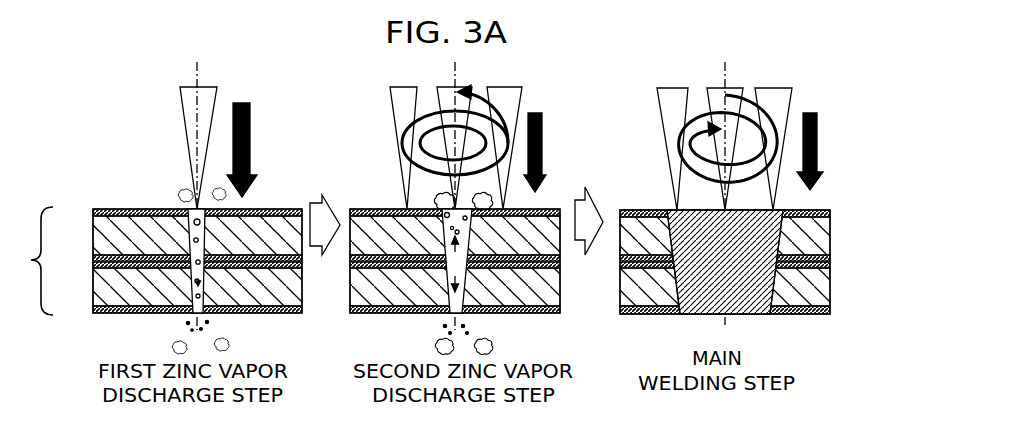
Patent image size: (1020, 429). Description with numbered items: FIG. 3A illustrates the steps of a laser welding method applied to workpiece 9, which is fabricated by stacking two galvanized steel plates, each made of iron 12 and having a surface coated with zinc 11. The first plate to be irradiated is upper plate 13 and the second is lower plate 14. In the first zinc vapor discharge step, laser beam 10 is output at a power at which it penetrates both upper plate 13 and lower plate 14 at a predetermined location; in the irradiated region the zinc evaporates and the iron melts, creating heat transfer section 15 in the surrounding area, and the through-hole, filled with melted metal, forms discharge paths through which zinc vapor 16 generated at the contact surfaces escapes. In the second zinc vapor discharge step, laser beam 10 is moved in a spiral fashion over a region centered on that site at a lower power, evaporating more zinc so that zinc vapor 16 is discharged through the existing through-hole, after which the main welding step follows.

The workpiece 9 is at (162, 232).
The laser beam 10 is at (193, 108).
The zinc 11 is at (118, 212).
The iron 12 is at (265, 240).
The upper plate 13 is at (110, 253).
The lower plate 14 is at (105, 290).
The heat transfer section 15 is at (168, 210).
The zinc vapor 16 is at (227, 335).